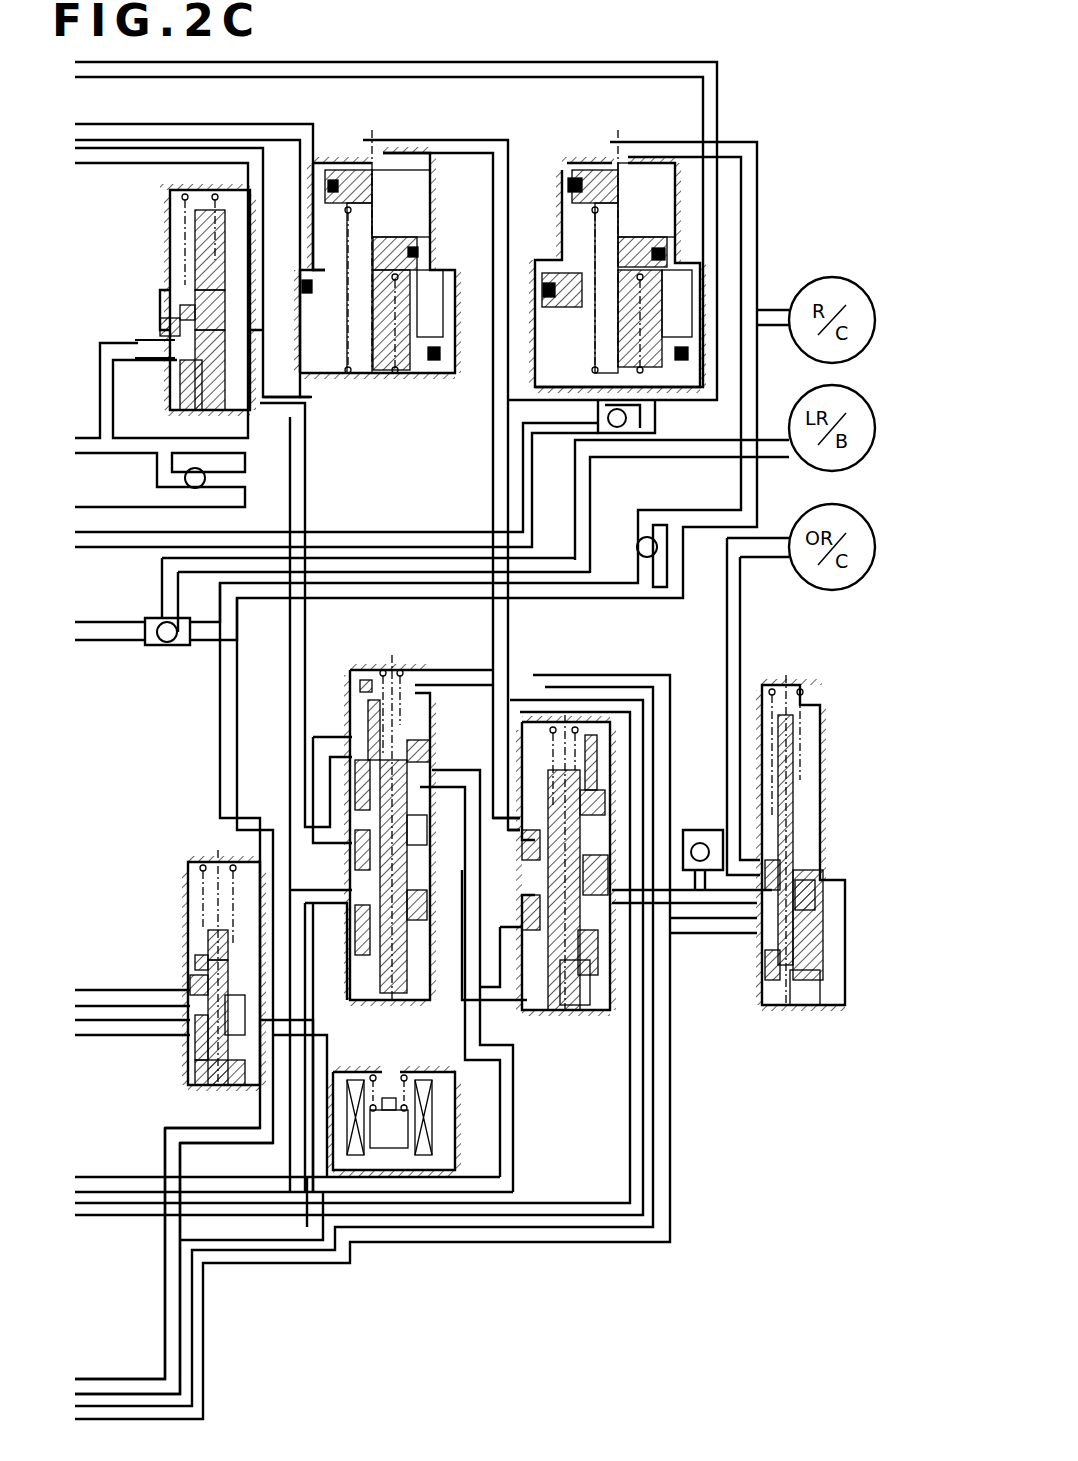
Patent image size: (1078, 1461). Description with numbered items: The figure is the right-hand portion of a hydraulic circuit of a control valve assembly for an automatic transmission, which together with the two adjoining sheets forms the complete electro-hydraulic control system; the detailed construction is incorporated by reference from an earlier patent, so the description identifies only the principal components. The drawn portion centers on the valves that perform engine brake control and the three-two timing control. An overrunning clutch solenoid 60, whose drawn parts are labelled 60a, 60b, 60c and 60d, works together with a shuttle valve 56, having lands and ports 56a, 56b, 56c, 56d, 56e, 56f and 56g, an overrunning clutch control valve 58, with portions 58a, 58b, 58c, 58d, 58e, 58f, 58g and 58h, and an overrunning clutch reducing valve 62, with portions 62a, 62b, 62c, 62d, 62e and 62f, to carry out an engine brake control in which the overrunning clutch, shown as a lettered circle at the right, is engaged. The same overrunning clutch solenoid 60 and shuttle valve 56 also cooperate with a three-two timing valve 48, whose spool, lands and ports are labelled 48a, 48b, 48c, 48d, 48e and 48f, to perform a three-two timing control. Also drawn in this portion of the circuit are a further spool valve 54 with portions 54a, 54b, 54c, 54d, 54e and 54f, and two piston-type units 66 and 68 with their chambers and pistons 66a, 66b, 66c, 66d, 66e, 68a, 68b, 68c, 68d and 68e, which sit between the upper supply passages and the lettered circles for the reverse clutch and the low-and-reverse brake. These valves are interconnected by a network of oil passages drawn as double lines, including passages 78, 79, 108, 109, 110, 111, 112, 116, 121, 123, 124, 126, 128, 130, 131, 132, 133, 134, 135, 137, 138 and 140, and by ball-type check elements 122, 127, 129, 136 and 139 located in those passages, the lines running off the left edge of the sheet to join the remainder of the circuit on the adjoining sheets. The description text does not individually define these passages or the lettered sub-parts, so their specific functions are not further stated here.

The 3-2 timing valve 48 is at (150, 293).
The spring 48a is at (180, 200).
The land 48b is at (180, 290).
The land 48c is at (180, 307).
The land 48d is at (165, 325).
The land 48e is at (172, 410).
The port 48f is at (115, 348).
The shift valve 54 is at (252, 966).
The spring 54a is at (248, 872).
The land 54b is at (205, 932).
The land 54c is at (192, 995).
The port 54d is at (245, 1020).
The land 54e is at (195, 960).
The port 54f is at (203, 1085).
The shuttle valve 56 is at (388, 807).
The spring 56a is at (403, 664).
The land 56b is at (366, 712).
The land 56c is at (358, 915).
The land 56d is at (418, 762).
The port 56e is at (368, 840).
The port 56f is at (362, 865).
The land 56g is at (360, 675).
The overrunning clutch control valve 58 is at (590, 838).
The spring 58a is at (575, 722).
The land 58b is at (600, 758).
The port 58c is at (585, 1005).
The port 58d is at (525, 845).
The land 58e is at (605, 858).
The port 58f is at (605, 903).
The port 58g is at (522, 925).
The land 58h is at (595, 785).
The overrunning clutch solenoid 60 is at (412, 1100).
The coil 60a is at (432, 1150).
The plunger 60b is at (400, 1130).
The valve element 60c is at (438, 1100).
The spring 60d is at (412, 1070).
The overrunning clutch reducing valve 62 is at (790, 868).
The spring 62a is at (808, 725).
The land 62b is at (800, 800).
The land 62c is at (765, 960).
The port 62d is at (815, 900).
The port 62e is at (760, 865).
The port 62f is at (805, 1005).
The accumulator 66 is at (379, 260).
The piston 66a is at (415, 237).
The piston 66b is at (372, 373).
The chamber 66c is at (430, 303).
The chamber 66d is at (405, 190).
The port 66e is at (346, 375).
The accumulator 68 is at (666, 242).
The piston 68a is at (660, 248).
The piston 68b is at (595, 350).
The chamber 68c is at (677, 302).
The chamber 68d is at (640, 192).
The chamber 68e is at (595, 339).
The oil passage 78 is at (243, 124).
The oil passage 79 is at (297, 1250).
The oil passage 108 is at (188, 1085).
The oil passage 109 is at (455, 1028).
The oil passage 110 is at (348, 1052).
The oil passage 111 is at (115, 547).
The oil passage 112 is at (273, 1160).
The oil passage 116 is at (537, 1215).
The oil passage 121 is at (263, 195).
The check valve 122 is at (172, 492).
The oil passage 123 is at (100, 390).
The oil passage 124 is at (88, 507).
The oil passage 126 is at (115, 640).
The check valve 127 is at (170, 645).
The oil passage 128 is at (757, 152).
The check valve 129 is at (680, 565).
The oil passage 130 is at (590, 488).
The oil passage 131 is at (88, 990).
The oil passage 132 is at (88, 1035).
The oil passage 133 is at (290, 715).
The oil passage 134 is at (470, 772).
The oil passage 135 is at (527, 62).
The check valve 136 is at (665, 414).
The oil passage 137 is at (697, 933).
The oil passage 138 is at (727, 687).
The check valve 139 is at (697, 830).
The oil passage 140 is at (655, 675).